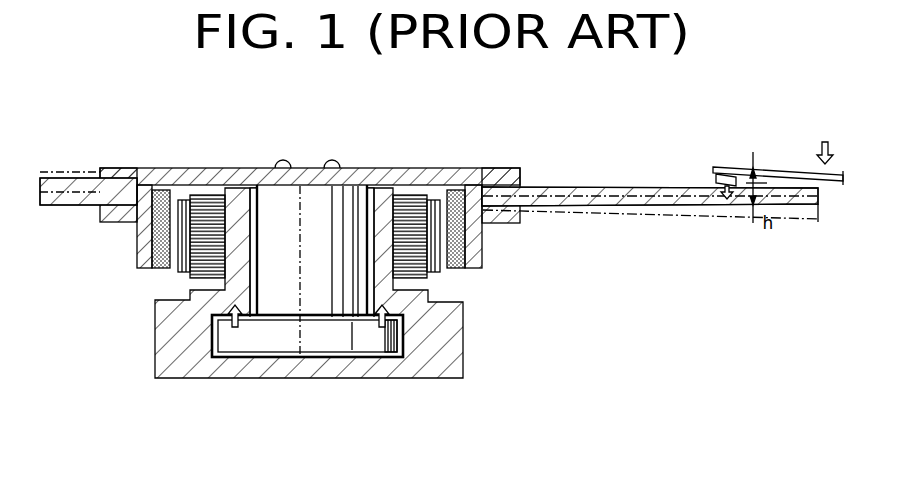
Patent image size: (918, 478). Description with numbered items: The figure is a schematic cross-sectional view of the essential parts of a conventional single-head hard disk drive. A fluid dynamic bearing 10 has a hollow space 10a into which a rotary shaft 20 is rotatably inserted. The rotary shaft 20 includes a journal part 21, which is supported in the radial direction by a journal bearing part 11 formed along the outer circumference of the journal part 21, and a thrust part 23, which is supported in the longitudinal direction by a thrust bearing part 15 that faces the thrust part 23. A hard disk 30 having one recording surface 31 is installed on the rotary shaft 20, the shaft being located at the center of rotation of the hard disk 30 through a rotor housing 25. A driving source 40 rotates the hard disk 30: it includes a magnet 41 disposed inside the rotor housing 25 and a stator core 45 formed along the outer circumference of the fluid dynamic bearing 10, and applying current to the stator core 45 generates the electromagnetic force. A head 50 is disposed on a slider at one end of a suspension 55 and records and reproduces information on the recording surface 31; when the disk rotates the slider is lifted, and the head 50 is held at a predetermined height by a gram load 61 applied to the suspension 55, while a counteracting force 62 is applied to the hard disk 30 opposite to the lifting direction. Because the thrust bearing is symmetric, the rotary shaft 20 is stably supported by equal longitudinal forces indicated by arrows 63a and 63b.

The fluid dynamic bearing 10 is at (150, 333).
The hollow space 10a is at (287, 187).
The journal bearing part 11 is at (276, 172).
The thrust bearing part 15 is at (212, 326).
The rotary shaft 20 is at (323, 192).
The journal part 21 is at (247, 197).
The thrust part 23 is at (405, 336).
The rotor housing 25 is at (190, 172).
The hard disk 30 is at (606, 186).
The recording surface 31 is at (557, 186).
The driving source 40 is at (466, 278).
The magnet 41 is at (462, 195).
The stator core 45 is at (412, 200).
The head 50 is at (716, 177).
The suspension 55 is at (775, 169).
The gram load 61 is at (824, 141).
The force 62 is at (727, 208).
The arrow 63a is at (236, 330).
The arrow 63b is at (382, 330).